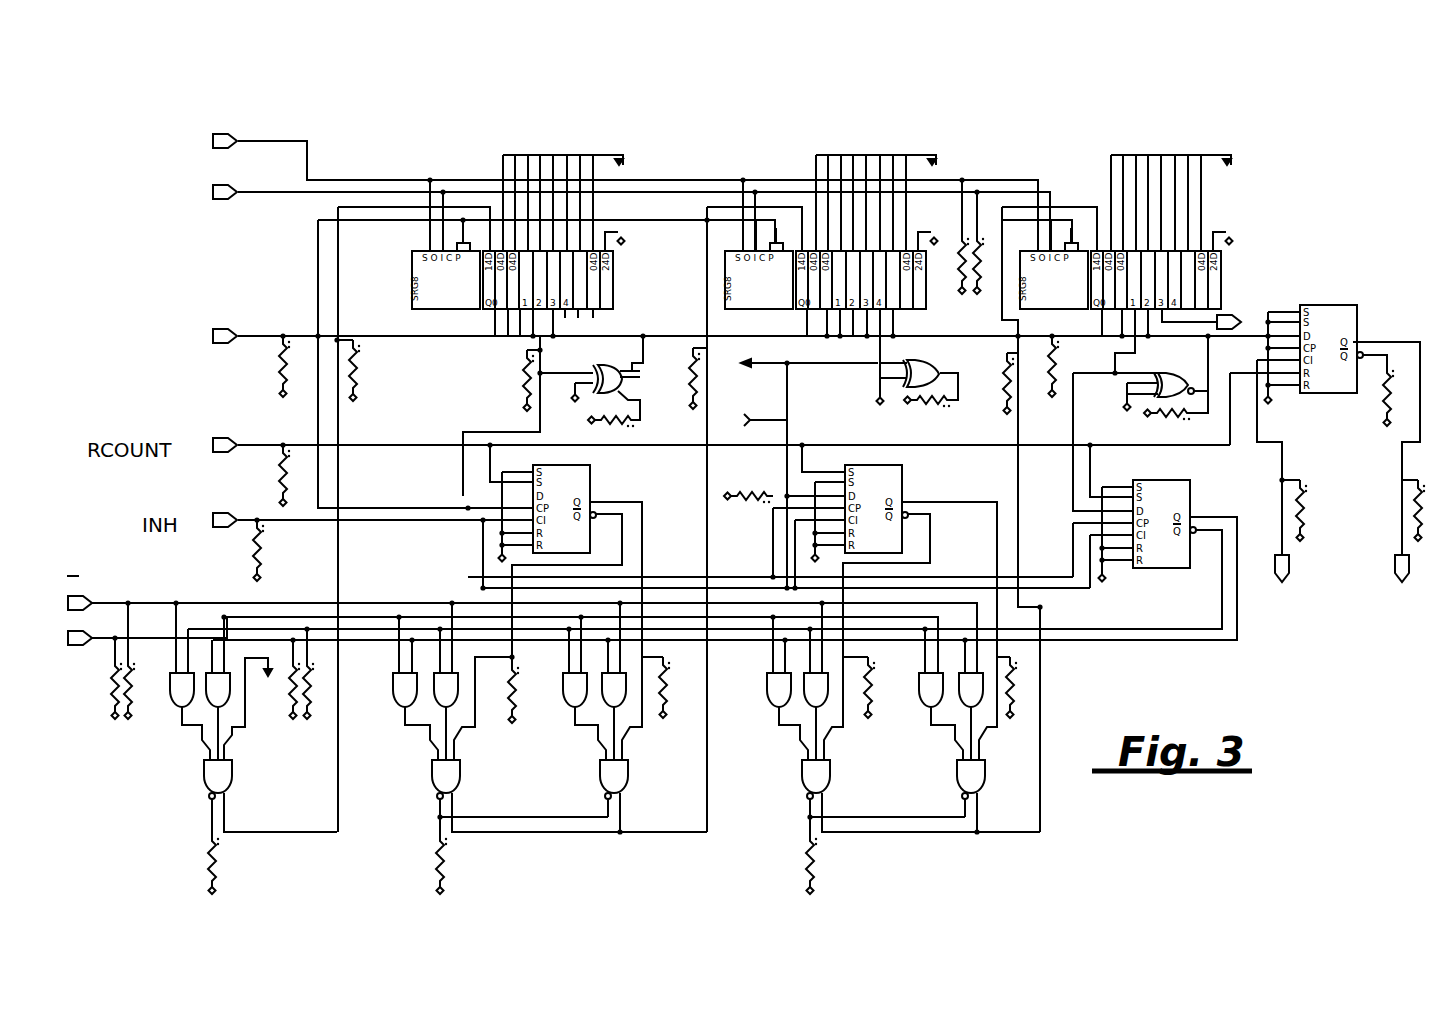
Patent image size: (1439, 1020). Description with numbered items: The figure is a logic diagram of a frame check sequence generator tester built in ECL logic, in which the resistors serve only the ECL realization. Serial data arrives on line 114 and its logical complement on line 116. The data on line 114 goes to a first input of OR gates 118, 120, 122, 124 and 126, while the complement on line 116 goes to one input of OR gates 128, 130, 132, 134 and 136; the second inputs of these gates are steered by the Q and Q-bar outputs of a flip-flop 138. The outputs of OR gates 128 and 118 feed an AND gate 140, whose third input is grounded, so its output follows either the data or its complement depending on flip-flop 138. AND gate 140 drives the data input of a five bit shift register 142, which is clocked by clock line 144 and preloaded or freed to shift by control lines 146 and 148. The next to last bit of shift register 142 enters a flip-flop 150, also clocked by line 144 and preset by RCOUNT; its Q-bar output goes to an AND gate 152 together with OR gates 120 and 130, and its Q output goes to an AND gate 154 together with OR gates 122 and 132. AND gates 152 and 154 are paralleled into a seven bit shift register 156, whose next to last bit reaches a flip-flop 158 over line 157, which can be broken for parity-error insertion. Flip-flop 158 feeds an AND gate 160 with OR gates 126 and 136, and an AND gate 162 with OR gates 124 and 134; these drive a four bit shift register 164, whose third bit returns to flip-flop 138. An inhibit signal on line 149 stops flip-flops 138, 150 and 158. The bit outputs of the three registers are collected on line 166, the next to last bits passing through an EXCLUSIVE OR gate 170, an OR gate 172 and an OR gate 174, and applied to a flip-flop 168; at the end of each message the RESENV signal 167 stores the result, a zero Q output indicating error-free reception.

The data line 114 is at (113, 642).
The complement data line 116 is at (162, 603).
The OR gate 118 is at (207, 716).
The OR gate 120 is at (395, 683).
The OR gate 122 is at (571, 683).
The OR gate 124 is at (768, 683).
The OR gate 126 is at (931, 683).
The OR gate 128 is at (170, 696).
The OR gate 130 is at (435, 716).
The OR gate 132 is at (602, 716).
The OR gate 134 is at (804, 716).
The OR gate 136 is at (959, 716).
The flip-flop 138 is at (1192, 495).
The AND gate 140 is at (200, 768).
The five bit shift register 142 is at (616, 283).
The clock line 144 is at (246, 348).
The control line 146 is at (298, 197).
The control line 148 is at (343, 180).
The inhibit line 149 is at (362, 521).
The flip-flop 150 is at (592, 480).
The AND gate 152 is at (432, 768).
The AND gate 154 is at (600, 768).
The shift register 156 is at (925, 306).
The line 157 is at (831, 372).
The flip-flop 158 is at (904, 480).
The AND gate 160 is at (960, 768).
The AND gate 162 is at (802, 768).
The shift register 164 is at (1222, 270).
The line 166 is at (668, 336).
The RESENV signal 167 is at (1283, 548).
The flip-flop 168 is at (1355, 310).
The EXCLUSIVE OR gate 170 is at (574, 416).
The OR gate 172 is at (915, 390).
The OR gate 174 is at (1180, 392).